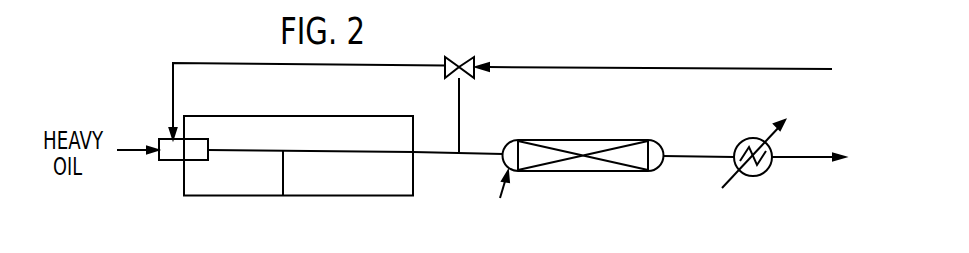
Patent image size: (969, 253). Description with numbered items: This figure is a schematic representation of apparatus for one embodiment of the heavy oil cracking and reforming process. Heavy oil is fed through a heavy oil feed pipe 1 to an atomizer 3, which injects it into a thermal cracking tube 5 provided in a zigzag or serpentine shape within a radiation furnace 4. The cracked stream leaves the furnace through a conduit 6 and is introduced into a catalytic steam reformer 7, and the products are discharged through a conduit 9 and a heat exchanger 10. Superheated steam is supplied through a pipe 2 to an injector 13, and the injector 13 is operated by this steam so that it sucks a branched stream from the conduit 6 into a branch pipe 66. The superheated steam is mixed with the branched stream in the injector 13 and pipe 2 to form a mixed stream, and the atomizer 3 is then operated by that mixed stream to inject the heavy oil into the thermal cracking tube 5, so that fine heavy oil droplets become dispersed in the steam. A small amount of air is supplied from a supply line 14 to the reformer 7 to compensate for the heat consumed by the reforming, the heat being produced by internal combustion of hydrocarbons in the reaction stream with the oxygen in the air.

The heavy oil feed pipe 1 is at (132, 150).
The pipe 2 is at (793, 69).
The atomizer 3 is at (173, 161).
The radiation furnace 4 is at (365, 116).
The thermal cracking tube 5 is at (283, 197).
The conduit 6 is at (440, 155).
The branch pipe 66 is at (460, 112).
The injector 13 is at (447, 60).
The catalytic steam reformer 7 is at (575, 172).
The supply line 14 is at (505, 185).
The conduit 9 is at (698, 157).
The heat exchanger 10 is at (752, 176).